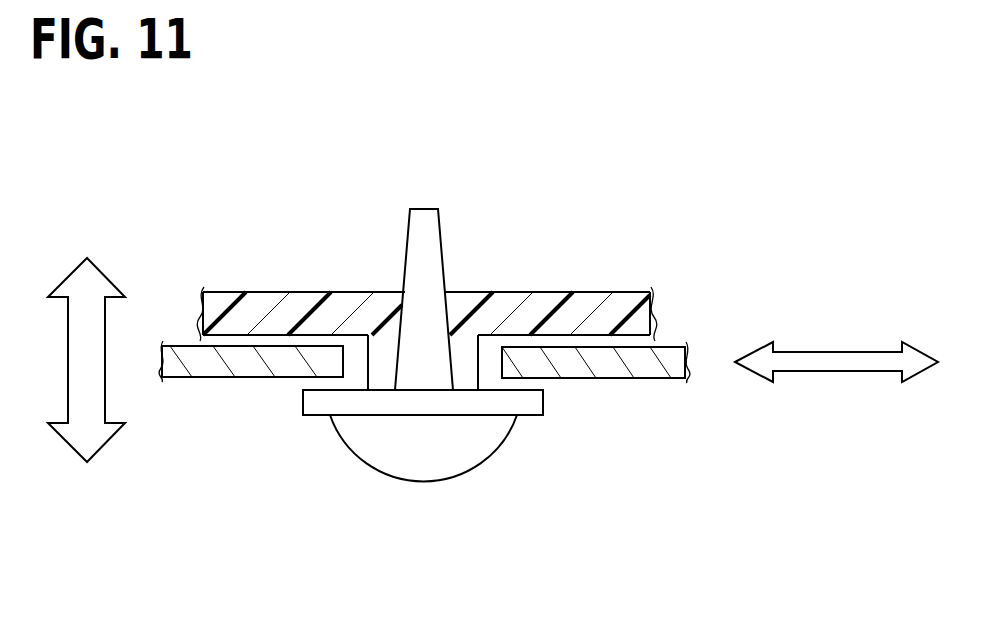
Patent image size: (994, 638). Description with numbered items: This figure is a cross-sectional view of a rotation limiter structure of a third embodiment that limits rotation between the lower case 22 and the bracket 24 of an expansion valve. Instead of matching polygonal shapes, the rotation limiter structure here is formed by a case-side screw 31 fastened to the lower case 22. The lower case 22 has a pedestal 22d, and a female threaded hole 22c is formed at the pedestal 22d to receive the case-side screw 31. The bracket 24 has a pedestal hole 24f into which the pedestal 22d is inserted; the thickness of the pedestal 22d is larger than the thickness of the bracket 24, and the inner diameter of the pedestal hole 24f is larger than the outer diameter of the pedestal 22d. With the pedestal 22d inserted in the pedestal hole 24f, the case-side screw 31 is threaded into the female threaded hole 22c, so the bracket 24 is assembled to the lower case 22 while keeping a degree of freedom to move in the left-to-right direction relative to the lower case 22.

The lower case 22 is at (288, 289).
The female threaded hole 22c is at (400, 340).
The pedestal 22d is at (455, 375).
The bracket 24 is at (220, 379).
The pedestal hole 24f is at (357, 365).
The case-side screw 31 is at (421, 483).